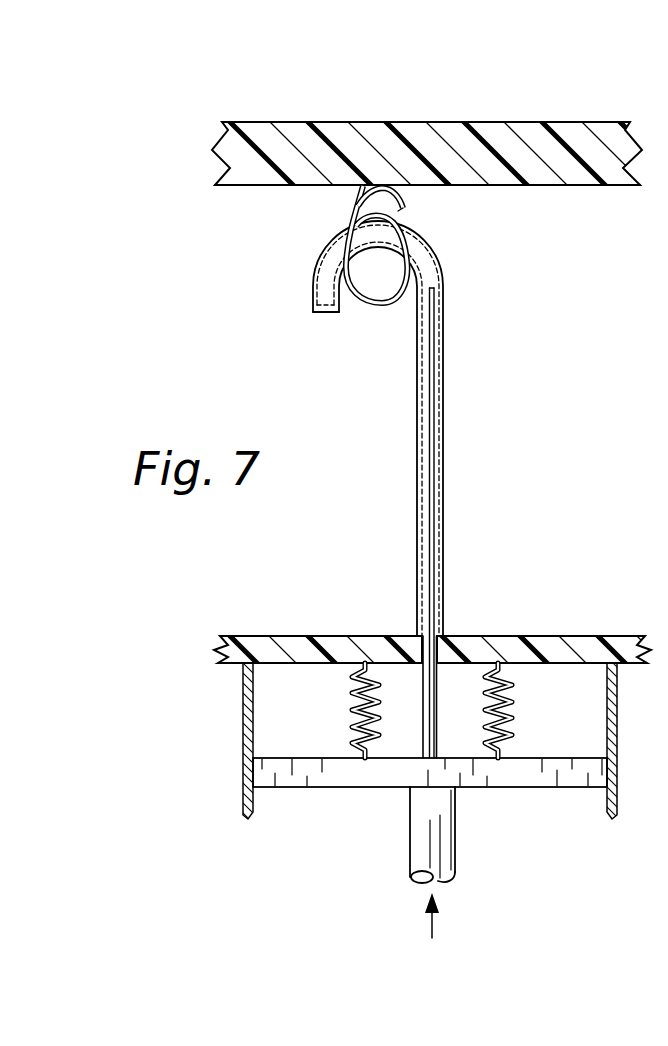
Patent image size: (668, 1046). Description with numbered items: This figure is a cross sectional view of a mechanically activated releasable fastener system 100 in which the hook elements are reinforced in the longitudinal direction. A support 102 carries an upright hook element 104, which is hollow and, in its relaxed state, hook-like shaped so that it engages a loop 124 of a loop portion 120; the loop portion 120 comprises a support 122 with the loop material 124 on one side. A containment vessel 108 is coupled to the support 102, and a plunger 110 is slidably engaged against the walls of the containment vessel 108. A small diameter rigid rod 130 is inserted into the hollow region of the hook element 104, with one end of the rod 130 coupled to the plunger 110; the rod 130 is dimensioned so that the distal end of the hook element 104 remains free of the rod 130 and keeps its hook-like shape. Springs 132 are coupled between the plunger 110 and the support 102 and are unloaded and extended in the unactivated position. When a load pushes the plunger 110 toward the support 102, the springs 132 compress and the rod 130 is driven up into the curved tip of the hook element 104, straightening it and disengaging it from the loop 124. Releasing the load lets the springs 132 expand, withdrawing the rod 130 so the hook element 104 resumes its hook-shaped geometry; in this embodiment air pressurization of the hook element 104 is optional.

The releasable fastener system 100 is at (272, 95).
The loop portion 120 is at (187, 163).
The support 122 is at (550, 186).
The loop material 124 is at (354, 218).
The hook element 104 is at (445, 388).
The rigid rod 130 is at (430, 478).
The support 102 is at (548, 636).
The springs 132 is at (350, 722).
The containment vessel 108 is at (243, 743).
The plunger 110 is at (413, 827).